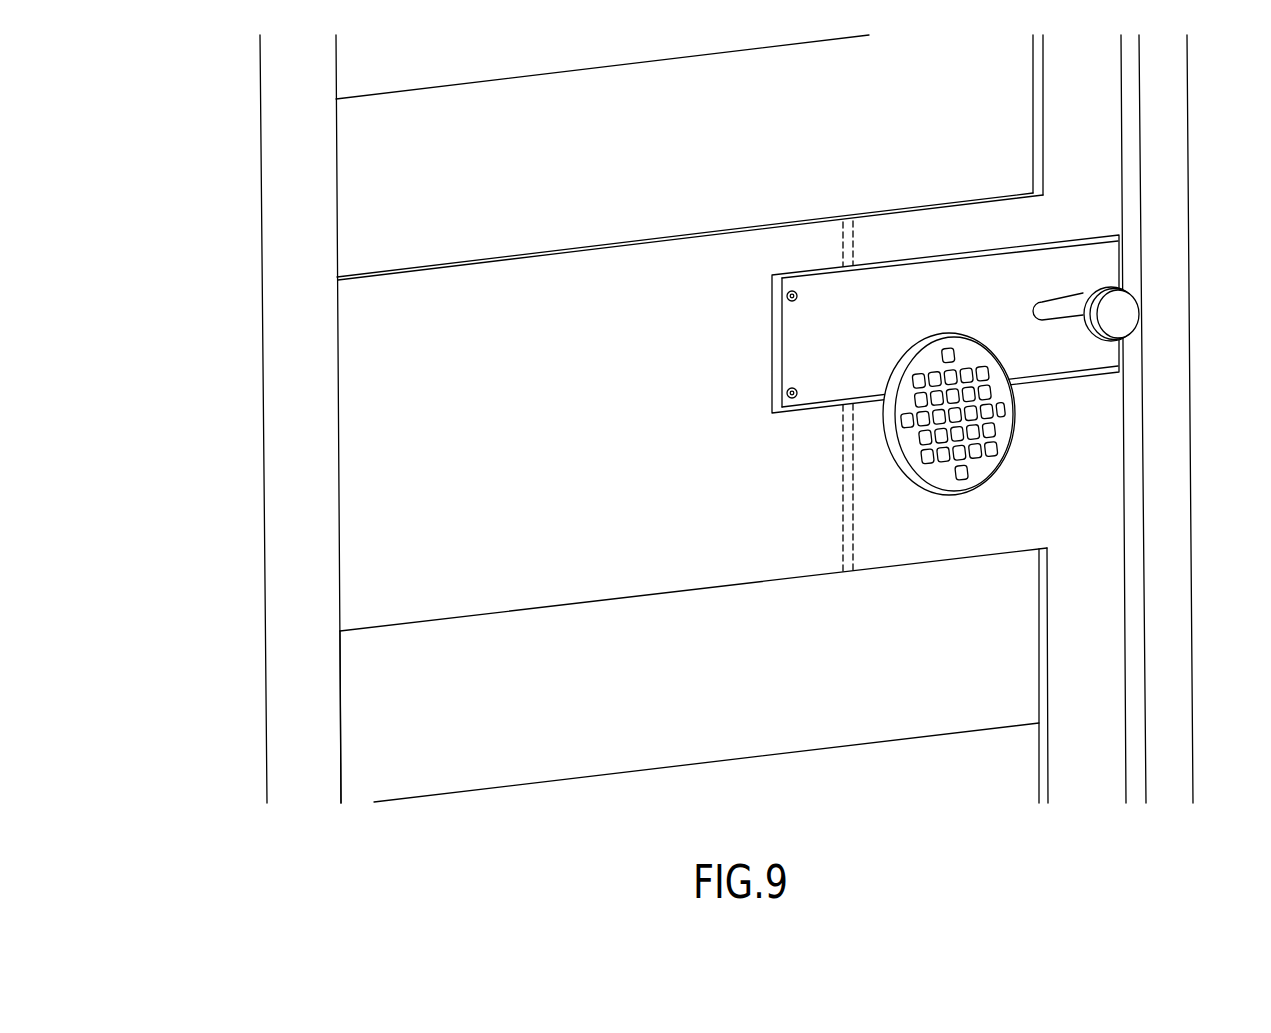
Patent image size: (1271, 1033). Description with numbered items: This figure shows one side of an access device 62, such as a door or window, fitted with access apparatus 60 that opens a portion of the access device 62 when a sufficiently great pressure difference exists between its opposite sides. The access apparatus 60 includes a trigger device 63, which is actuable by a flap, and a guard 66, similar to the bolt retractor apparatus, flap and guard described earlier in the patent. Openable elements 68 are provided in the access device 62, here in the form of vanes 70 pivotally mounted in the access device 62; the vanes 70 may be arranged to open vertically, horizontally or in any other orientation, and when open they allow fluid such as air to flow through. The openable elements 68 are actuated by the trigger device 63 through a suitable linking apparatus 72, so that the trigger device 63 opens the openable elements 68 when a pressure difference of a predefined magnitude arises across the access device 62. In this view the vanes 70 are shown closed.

The access apparatus 60 is at (797, 498).
The access device 62 is at (1170, 419).
The trigger device 63 is at (1037, 459).
The guard 66 is at (994, 414).
The openable elements 68 is at (533, 705).
The vanes 70 is at (694, 646).
The linking apparatus 72 is at (909, 344).